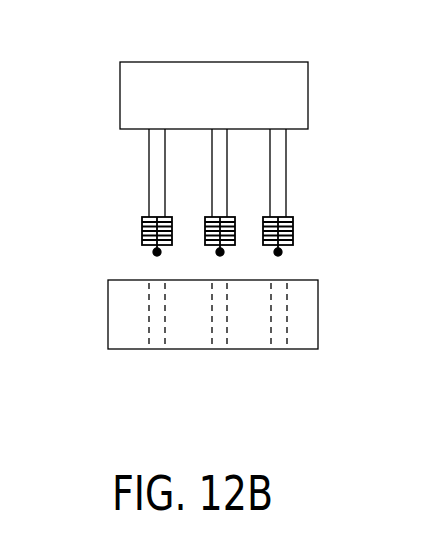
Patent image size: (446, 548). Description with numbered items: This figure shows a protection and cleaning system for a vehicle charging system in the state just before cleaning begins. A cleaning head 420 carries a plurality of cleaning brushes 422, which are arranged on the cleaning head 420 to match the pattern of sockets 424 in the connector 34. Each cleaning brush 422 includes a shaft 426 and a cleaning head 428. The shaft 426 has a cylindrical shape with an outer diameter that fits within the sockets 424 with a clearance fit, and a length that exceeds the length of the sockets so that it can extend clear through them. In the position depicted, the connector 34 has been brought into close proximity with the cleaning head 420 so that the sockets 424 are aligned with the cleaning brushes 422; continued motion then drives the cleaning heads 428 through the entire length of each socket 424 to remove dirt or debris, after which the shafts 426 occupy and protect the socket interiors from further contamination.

The cleaning head 420 is at (135, 100).
The cleaning brush 422 is at (215, 159).
The socket 424 is at (223, 364).
The shaft 426 is at (155, 173).
The cleaning head 428 is at (153, 232).
The connector 34 is at (303, 323).